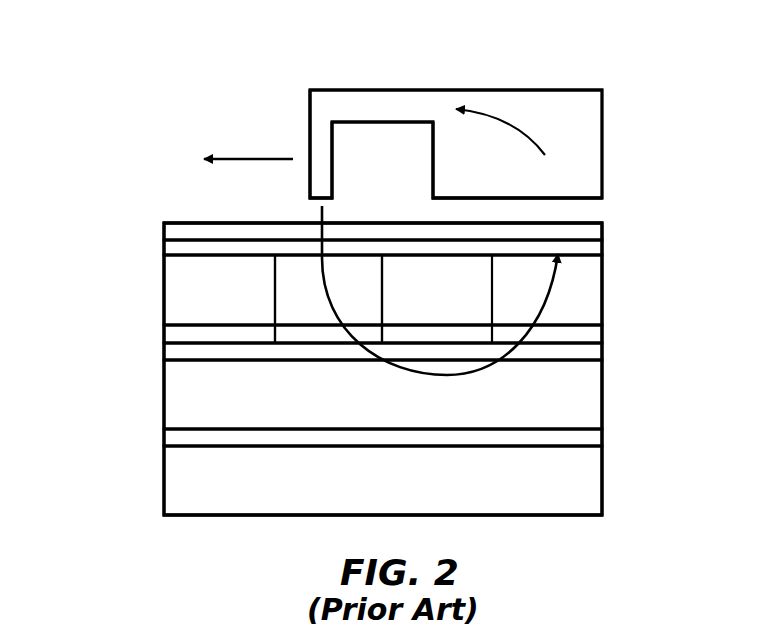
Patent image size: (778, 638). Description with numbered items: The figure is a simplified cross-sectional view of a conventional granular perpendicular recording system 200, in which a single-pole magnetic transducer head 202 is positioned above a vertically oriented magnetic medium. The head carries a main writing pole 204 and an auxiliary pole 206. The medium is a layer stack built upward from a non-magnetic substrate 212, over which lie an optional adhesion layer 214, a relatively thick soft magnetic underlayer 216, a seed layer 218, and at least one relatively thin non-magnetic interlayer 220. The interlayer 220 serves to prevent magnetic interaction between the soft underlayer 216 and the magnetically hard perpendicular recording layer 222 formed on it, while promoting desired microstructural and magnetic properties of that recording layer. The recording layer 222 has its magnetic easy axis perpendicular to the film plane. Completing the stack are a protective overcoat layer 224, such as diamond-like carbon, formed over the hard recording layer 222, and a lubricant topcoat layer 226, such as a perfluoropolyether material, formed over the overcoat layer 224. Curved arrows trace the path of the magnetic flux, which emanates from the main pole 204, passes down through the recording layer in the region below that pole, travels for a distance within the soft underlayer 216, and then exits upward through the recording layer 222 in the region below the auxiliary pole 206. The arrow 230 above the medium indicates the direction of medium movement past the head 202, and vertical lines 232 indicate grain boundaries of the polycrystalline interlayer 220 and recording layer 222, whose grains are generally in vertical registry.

The perpendicular recording system 200 is at (490, 55).
The magnetic transducer head 202 is at (540, 90).
The main (writing) pole 204 is at (290, 113).
The auxiliary pole 206 is at (630, 113).
The non-magnetic substrate 212 is at (603, 483).
The adhesion layer 214 is at (603, 437).
The soft magnetic underlayer 216 is at (603, 393).
The seed layer 218 is at (603, 352).
The non-magnetic interlayer 220 is at (603, 333).
The hard perpendicular magnetic recording layer 222 is at (603, 291).
The protective overcoat layer 224 is at (603, 247).
The lubricant topcoat layer 226 is at (603, 231).
The arrow 230 is at (236, 158).
The vertical lines 232 is at (270, 333).